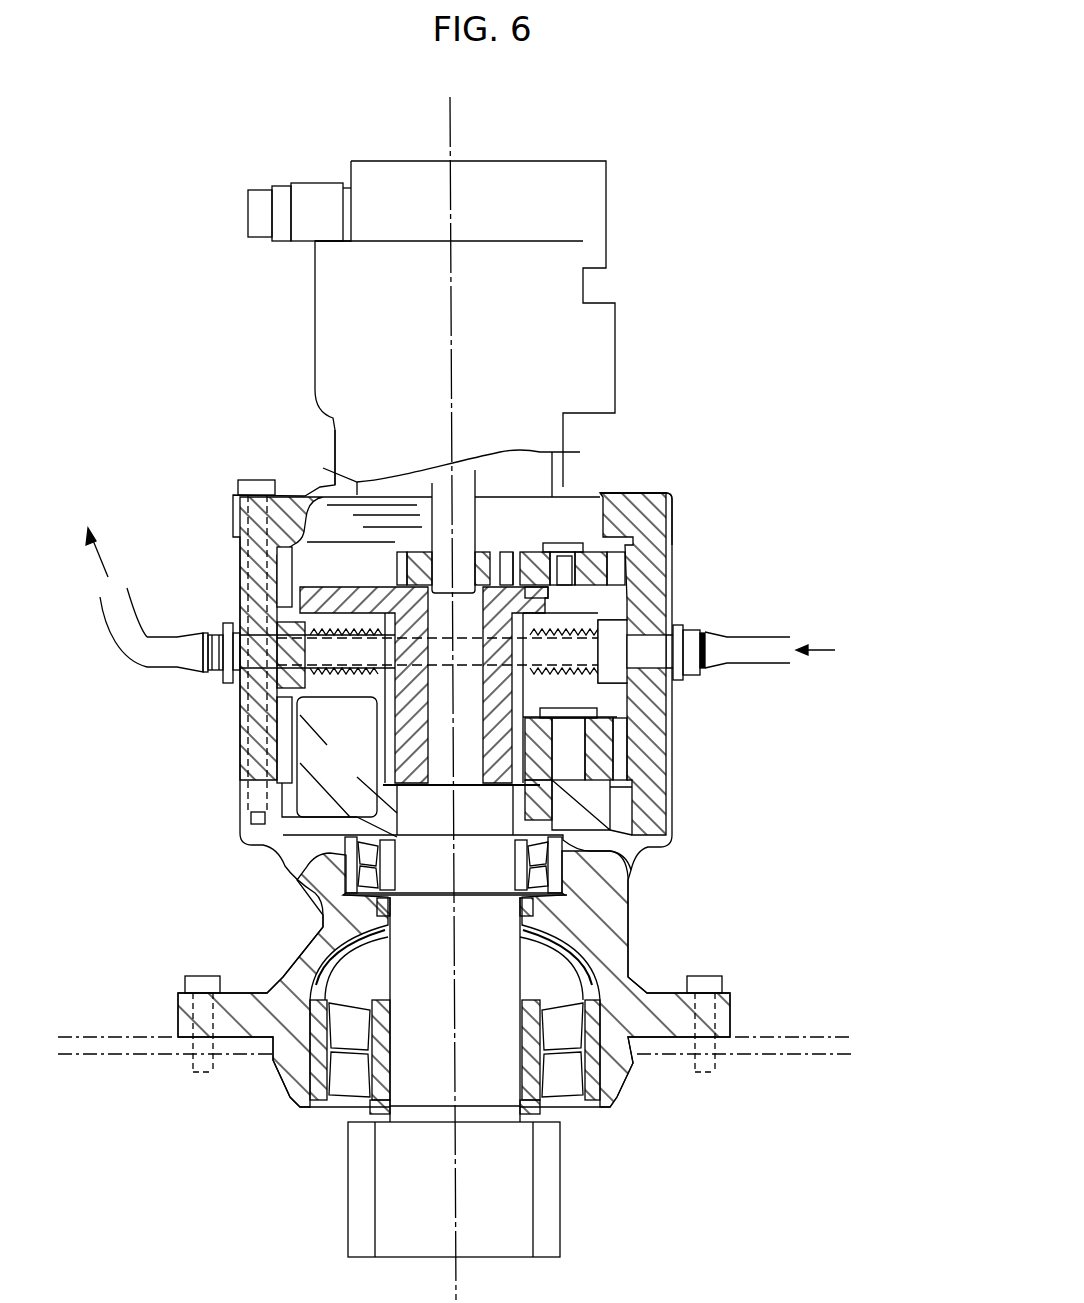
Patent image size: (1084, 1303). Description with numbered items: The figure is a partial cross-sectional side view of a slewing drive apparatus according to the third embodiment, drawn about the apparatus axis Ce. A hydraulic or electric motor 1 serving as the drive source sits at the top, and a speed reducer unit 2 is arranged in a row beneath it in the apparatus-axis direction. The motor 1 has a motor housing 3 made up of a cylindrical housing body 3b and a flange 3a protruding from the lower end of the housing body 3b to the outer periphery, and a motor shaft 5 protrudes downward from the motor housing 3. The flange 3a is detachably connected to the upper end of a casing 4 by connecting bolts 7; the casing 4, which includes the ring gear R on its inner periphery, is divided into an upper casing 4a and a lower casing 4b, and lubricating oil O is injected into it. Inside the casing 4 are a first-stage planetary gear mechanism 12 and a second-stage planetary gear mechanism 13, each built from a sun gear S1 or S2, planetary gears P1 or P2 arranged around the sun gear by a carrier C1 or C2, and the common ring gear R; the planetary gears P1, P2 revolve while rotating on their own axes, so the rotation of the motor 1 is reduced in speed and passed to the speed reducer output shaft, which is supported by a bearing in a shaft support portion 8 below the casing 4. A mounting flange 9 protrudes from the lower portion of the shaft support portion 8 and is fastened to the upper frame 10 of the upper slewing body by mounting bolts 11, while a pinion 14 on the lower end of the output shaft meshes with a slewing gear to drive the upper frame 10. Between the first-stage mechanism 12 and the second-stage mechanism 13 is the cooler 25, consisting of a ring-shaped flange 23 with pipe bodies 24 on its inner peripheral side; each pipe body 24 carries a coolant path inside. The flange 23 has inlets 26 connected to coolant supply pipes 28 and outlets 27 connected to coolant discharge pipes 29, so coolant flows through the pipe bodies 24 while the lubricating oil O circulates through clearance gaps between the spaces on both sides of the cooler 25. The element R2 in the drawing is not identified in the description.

The motor 1 is at (310, 337).
The speed reducer unit 2 is at (412, 677).
The motor housing 3 is at (478, 353).
The flange 3a is at (653, 492).
The housing body 3b is at (350, 443).
The casing 4 is at (147, 557).
The upper casing 4a is at (240, 580).
The lower casing 4b is at (242, 735).
The motor shaft 5 is at (483, 485).
The connecting bolts 7 is at (257, 480).
The shaft support portion 8 is at (632, 897).
The mounting flange 9 is at (732, 1012).
The upper frame 10 is at (122, 1035).
The mounting bolts 11 is at (200, 976).
The first-stage planetary gear mechanism 12 is at (692, 547).
The second-stage planetary gear mechanism 13 is at (690, 697).
The pinion 14 is at (560, 1194).
The flange 23 is at (667, 607).
The pipe bodies 24 is at (350, 677).
The cooler 25 is at (632, 604).
The inlets 26 is at (640, 665).
The outlets 27 is at (277, 643).
The coolant supply pipes 28 is at (780, 637).
The coolant discharge pipes 29 is at (108, 598).
The center axis Ce is at (450, 122).
The lubricating oil O is at (398, 485).
The ring gear R is at (300, 757).
The rotating member R2 is at (458, 711).
The sun gear S1 is at (400, 568).
The sun gear S2 is at (372, 757).
The planetary gears P1 is at (592, 553).
The planetary gears P2 is at (612, 787).
The carrier C1 is at (233, 498).
The carrier C2 is at (313, 813).